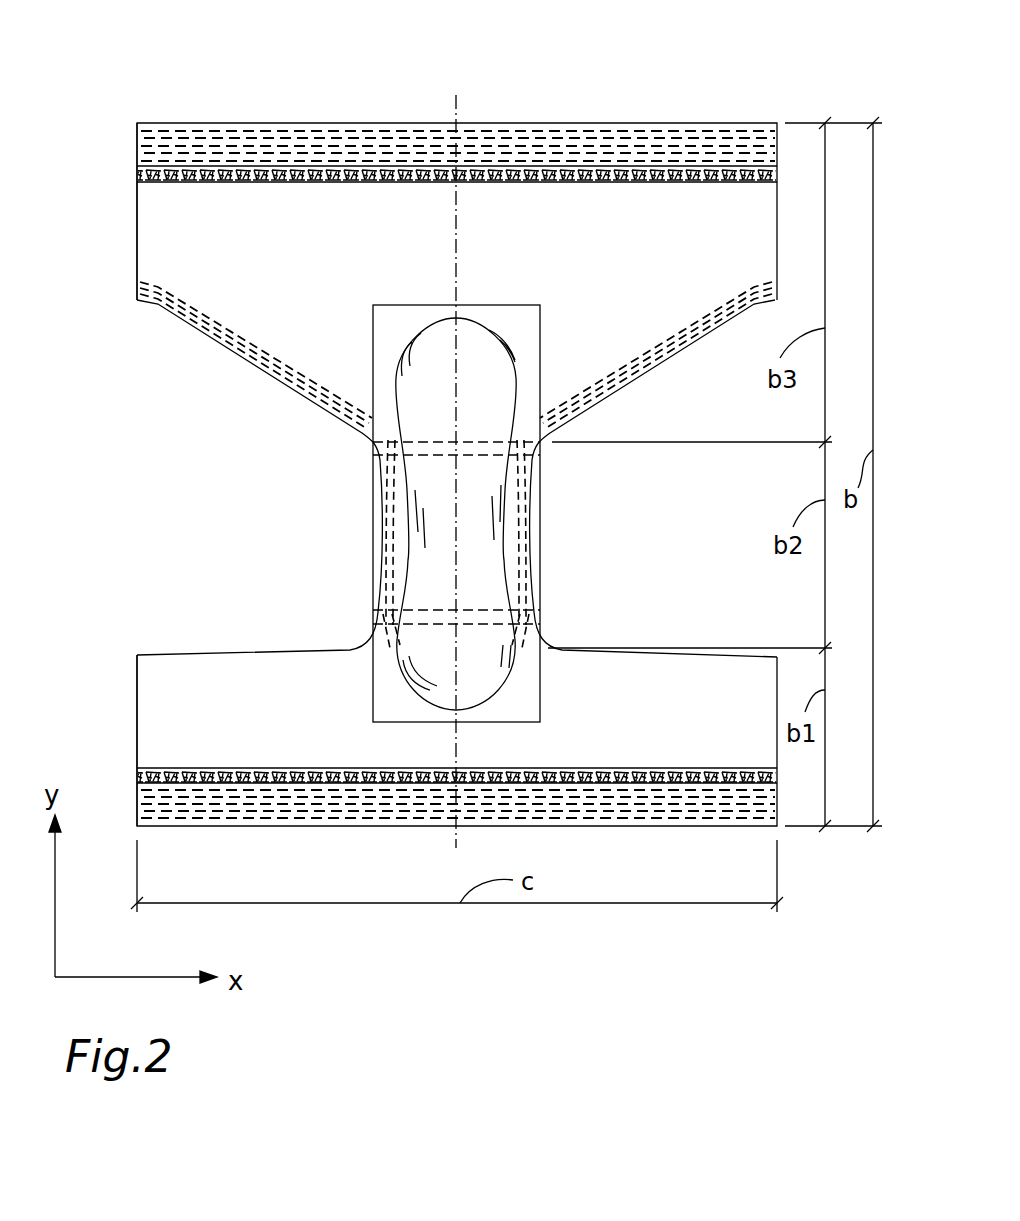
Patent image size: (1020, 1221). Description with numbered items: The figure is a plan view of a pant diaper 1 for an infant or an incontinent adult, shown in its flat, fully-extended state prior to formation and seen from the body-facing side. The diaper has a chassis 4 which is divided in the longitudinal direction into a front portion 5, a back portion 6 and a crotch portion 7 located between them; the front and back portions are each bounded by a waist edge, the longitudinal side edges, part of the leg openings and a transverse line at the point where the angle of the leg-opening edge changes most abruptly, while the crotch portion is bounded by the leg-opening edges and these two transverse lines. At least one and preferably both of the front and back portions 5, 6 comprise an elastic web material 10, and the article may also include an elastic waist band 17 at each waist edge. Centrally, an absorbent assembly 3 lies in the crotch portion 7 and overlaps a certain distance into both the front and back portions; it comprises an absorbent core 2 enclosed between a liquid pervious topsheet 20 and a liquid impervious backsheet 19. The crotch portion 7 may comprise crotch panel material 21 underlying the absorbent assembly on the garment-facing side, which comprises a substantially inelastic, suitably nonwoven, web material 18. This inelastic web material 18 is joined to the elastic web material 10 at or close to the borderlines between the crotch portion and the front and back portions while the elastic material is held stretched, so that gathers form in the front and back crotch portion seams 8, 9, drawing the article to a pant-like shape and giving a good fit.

The pant diaper 1 is at (730, 62).
The absorbent core 2 is at (524, 514).
The absorbent assembly 3 is at (520, 334).
The chassis 4 is at (135, 232).
The front portion 5 is at (338, 722).
The back portion 6 is at (338, 257).
The crotch portion 7 is at (553, 544).
The front crotch portion seam 8 is at (378, 618).
The back crotch portion seam 9 is at (372, 433).
The elastic web material 10 is at (457, 474).
The elastic waist band 17 is at (283, 140).
The inelastic web material 18 is at (523, 462).
The backsheet 19 is at (524, 514).
The topsheet 20 is at (478, 530).
The crotch panel material 21 is at (531, 556).